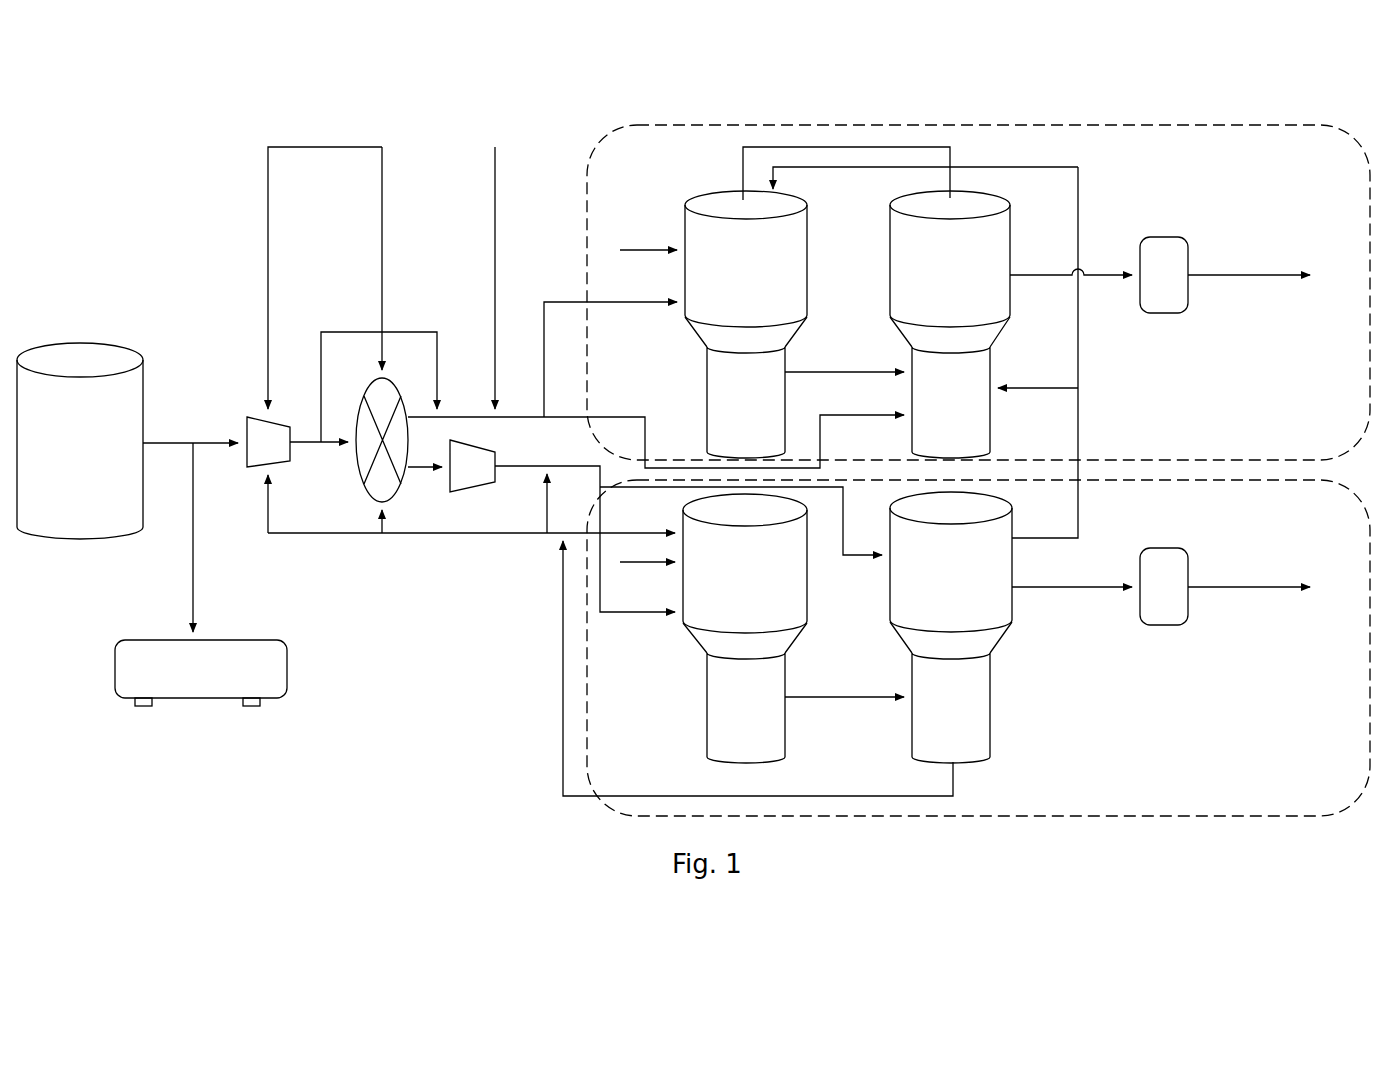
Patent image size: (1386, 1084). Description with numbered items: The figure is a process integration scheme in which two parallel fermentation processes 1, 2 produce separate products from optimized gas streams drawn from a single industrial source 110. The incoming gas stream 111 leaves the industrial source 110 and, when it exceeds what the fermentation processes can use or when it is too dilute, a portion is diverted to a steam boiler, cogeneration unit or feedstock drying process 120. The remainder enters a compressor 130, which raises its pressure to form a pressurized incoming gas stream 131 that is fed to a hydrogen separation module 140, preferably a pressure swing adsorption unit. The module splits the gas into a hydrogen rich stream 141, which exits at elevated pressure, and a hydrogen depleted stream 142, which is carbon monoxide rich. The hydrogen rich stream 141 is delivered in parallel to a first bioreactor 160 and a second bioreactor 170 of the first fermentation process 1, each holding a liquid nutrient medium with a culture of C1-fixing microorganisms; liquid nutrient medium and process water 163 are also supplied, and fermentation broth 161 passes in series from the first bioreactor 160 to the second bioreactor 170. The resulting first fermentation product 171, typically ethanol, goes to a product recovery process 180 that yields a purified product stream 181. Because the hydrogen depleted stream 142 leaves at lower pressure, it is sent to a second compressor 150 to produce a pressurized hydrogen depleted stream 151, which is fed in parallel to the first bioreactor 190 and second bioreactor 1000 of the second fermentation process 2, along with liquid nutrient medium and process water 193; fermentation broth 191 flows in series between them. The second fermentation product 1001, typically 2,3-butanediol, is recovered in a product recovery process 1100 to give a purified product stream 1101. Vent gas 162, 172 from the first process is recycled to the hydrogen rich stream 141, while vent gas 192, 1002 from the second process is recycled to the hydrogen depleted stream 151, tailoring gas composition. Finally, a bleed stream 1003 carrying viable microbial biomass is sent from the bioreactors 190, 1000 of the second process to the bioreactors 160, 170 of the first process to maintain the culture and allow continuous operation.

The first fermentation process 1 is at (985, 292).
The second fermentation process 2 is at (985, 648).
The industrial source 110 is at (80, 441).
The incoming gas stream 111 is at (190, 528).
The feedstock drying process 120 is at (201, 673).
The compressor 130 is at (314, 340).
The pressurized incoming gas stream 131 is at (363, 400).
The hydrogen separation module 140 is at (382, 340).
The hydrogen rich stream 141 is at (656, 307).
The hydrogen depleted stream 142 is at (425, 455).
The compressor 150 is at (472, 466).
The pressurized hydrogen depleted stream 151 is at (688, 529).
The first bioreactor 160 is at (746, 324).
The fermentation broth 161 is at (844, 361).
The vent gas 162 is at (821, 173).
The liquid nutrient medium and process water 163 is at (648, 239).
The second bioreactor 170 is at (950, 324).
The first fermentation product 171 is at (1071, 265).
The vent gas 172 is at (925, 158).
The product recovery process 180 is at (1164, 275).
The purified product stream 181 is at (1249, 264).
The first bioreactor 190 is at (745, 628).
The fermentation broth 191 is at (844, 686).
The vent gas 192 is at (471, 521).
The liquid nutrient medium and process water 193 is at (647, 551).
The second bioreactor 1000 is at (951, 627).
The second fermentation product 1001 is at (1072, 577).
The vent gas 1002 is at (758, 668).
The bleed stream 1003 is at (1059, 352).
The product recovery process 1100 is at (1164, 586).
The purified product stream 1101 is at (1249, 575).